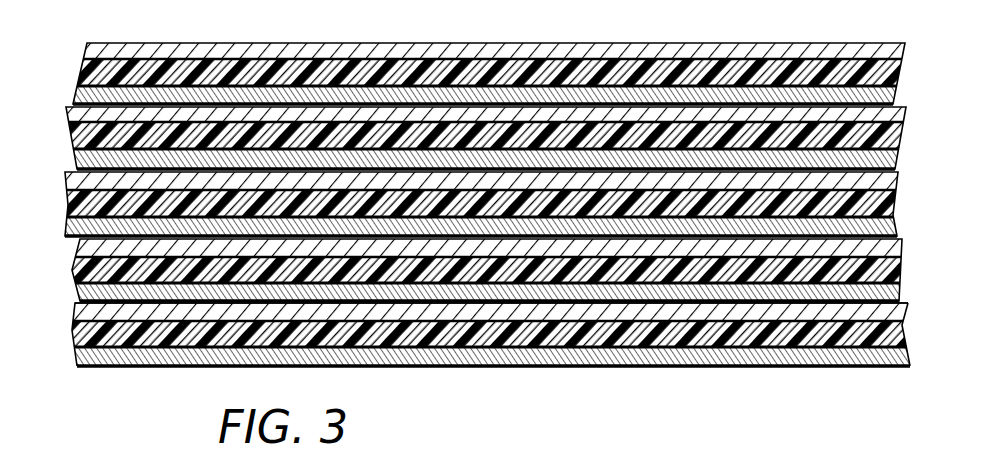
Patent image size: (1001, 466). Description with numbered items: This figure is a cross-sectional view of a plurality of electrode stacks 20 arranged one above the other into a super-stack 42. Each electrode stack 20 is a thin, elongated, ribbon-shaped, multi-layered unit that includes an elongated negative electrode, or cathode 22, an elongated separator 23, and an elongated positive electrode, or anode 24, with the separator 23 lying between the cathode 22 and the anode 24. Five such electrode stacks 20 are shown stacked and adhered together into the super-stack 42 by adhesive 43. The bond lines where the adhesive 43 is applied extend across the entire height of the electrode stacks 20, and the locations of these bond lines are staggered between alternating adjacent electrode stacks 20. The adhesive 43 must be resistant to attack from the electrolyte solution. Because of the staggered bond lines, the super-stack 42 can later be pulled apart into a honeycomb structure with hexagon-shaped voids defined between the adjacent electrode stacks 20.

The electrode stack 20 is at (56, 211).
The cathode 22 is at (582, 305).
The separator 23 is at (688, 328).
The anode 24 is at (557, 358).
The super-stack 42 is at (177, 375).
The adhesive 43 is at (869, 305).